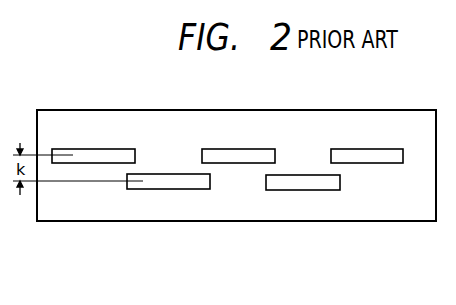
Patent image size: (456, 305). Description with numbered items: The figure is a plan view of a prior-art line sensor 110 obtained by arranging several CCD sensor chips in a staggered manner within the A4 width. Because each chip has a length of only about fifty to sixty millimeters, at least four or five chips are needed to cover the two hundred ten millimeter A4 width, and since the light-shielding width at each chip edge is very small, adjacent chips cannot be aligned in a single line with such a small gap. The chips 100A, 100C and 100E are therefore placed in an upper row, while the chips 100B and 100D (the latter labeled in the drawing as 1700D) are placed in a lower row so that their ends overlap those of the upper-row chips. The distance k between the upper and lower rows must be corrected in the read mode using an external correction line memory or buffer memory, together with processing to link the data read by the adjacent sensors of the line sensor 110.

The CCD sensor chip 100A is at (103, 150).
The CCD sensor chip 100B is at (157, 186).
The CCD sensor chip 100C is at (257, 150).
The CCD sensor chip 100D is at (300, 186).
The photosensor element 1700D is at (292, 221).
The CCD sensor chip 100E is at (382, 150).
The line sensor 110 is at (382, 219).